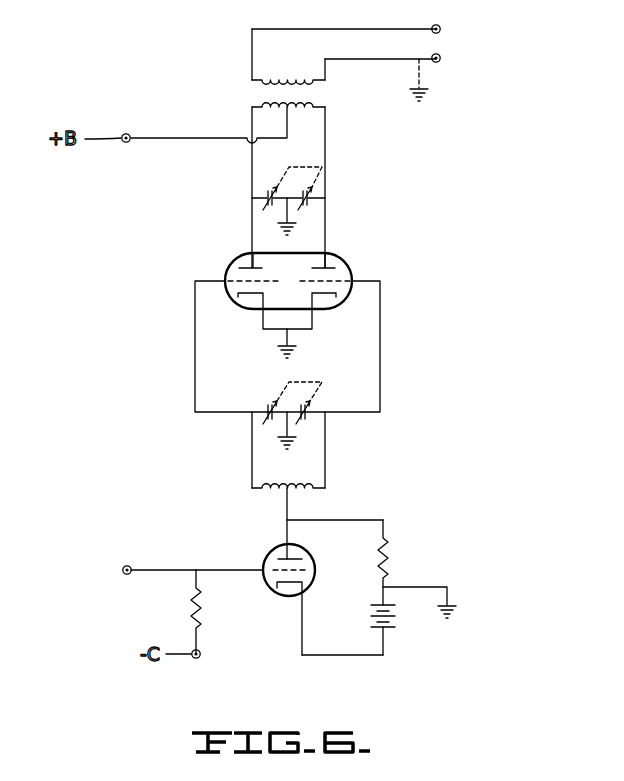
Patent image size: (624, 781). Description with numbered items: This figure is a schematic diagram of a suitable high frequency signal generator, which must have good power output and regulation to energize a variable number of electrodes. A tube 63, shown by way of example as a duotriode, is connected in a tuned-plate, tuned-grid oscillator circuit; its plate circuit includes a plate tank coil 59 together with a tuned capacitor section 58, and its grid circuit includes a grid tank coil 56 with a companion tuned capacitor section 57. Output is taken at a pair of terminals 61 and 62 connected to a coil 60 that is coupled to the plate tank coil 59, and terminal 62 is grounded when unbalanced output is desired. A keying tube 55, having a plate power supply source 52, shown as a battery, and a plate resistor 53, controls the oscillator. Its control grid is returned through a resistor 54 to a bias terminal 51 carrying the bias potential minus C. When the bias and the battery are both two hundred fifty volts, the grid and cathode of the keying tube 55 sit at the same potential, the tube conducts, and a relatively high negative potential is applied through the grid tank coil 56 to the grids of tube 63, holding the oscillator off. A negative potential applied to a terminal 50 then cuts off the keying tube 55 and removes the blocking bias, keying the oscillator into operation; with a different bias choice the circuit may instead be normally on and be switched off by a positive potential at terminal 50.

The terminal 50 is at (121, 570).
The bias terminal -C 51 is at (201, 654).
The plate power supply source 52 is at (392, 615).
The plate resistor 53 is at (389, 555).
The grid resistor 54 is at (190, 606).
The keying tube 55 is at (268, 556).
The grid tank coil 56 is at (272, 492).
The variable capacitors 57 is at (322, 382).
The variable capacitors 58 is at (296, 165).
The plate tank coil 59 is at (262, 104).
The coil 60 is at (289, 79).
The terminal 61 is at (441, 29).
The terminal 62 is at (441, 58).
The tube 63 is at (351, 256).